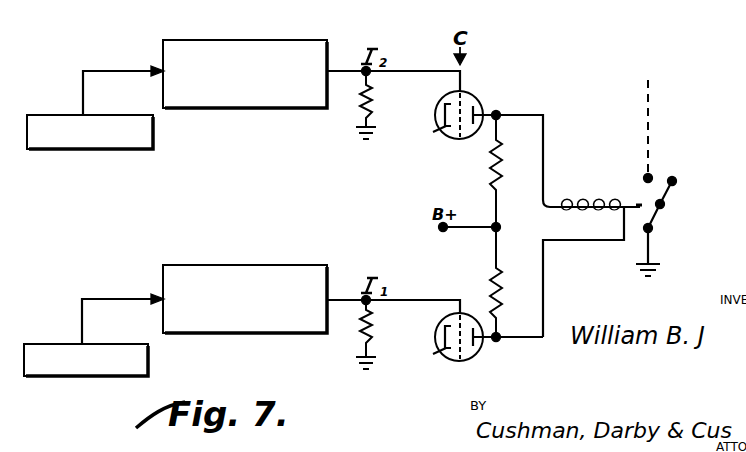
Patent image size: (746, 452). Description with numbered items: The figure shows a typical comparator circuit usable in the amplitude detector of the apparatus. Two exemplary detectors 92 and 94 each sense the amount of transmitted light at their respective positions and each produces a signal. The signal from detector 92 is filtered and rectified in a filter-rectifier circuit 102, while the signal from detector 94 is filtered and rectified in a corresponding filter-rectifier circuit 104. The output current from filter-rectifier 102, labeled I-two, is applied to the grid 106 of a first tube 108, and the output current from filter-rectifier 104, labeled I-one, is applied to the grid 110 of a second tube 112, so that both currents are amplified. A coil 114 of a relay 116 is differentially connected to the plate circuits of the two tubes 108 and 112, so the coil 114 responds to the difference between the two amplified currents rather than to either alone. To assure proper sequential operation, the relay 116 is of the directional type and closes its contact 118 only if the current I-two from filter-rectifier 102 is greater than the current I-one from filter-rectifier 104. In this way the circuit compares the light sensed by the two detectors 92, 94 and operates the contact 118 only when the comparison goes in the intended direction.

The detector 92 is at (72, 151).
The detector 94 is at (70, 378).
The filter-rectifier circuit 102 is at (278, 42).
The filter-rectifier circuit 104 is at (233, 266).
The grid 106 is at (481, 99).
The tube 108 is at (483, 104).
The grid 110 is at (460, 302).
The tube 112 is at (456, 361).
The coil 114 is at (586, 212).
The relay 116 is at (631, 173).
The contact 118 is at (668, 195).